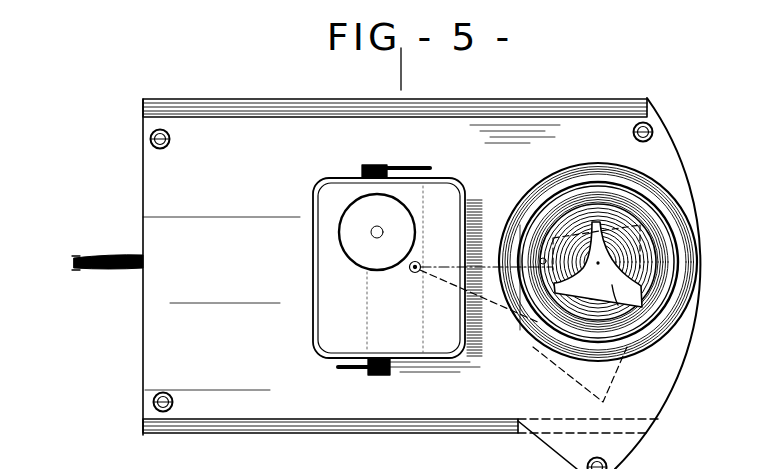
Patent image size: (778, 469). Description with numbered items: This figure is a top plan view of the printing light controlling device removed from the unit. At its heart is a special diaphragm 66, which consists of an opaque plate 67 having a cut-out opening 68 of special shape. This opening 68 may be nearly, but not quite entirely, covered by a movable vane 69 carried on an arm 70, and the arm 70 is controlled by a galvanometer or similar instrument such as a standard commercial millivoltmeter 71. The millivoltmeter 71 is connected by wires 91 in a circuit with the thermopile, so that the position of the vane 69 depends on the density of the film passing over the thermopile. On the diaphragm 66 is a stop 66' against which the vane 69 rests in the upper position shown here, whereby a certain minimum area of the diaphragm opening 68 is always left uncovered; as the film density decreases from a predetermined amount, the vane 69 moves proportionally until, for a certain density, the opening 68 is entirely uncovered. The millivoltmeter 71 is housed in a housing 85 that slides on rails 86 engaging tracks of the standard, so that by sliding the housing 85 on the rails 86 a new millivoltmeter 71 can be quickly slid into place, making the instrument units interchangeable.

The housing 85 is at (421, 283).
The rails 86 is at (357, 112).
The wires 91 is at (112, 258).
The millivoltmeter 71 is at (389, 270).
The arm 70 is at (495, 263).
The stop 66' is at (598, 262).
The diaphragm 66 is at (629, 262).
The opaque plate 67 is at (623, 268).
The cut-out opening 68 is at (640, 315).
The movable vane 69 is at (655, 226).